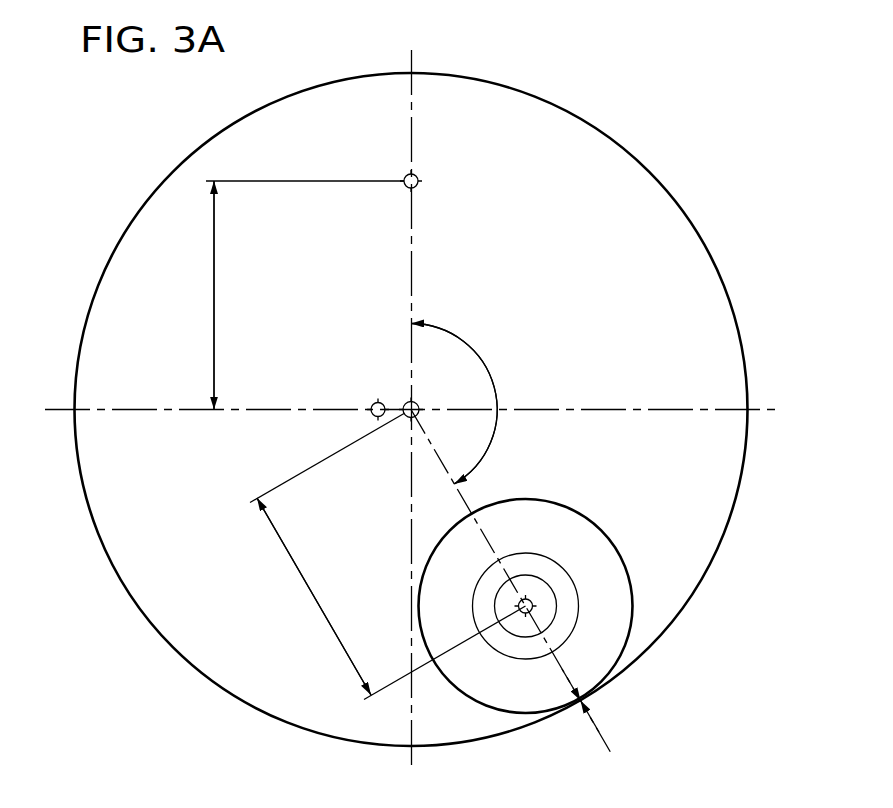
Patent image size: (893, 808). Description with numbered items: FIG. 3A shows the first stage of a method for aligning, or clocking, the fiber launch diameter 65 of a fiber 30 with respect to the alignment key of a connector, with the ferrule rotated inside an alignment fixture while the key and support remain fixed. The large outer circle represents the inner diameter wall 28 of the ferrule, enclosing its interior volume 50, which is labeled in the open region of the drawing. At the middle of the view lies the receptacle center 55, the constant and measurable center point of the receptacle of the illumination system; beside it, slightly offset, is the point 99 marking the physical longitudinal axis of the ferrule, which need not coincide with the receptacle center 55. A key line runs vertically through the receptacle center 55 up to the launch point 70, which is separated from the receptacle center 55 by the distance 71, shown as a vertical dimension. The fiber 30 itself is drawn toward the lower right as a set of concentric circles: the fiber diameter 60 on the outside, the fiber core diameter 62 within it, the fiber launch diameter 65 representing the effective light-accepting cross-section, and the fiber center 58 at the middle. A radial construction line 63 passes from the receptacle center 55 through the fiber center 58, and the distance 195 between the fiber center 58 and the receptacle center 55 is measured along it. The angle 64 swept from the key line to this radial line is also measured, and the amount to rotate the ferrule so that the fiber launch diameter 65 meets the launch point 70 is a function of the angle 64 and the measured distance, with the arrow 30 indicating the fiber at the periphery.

The inner diameter wall 28 is at (569, 106).
The interior volume 50 is at (606, 298).
The receptacle center 55 is at (417, 404).
The physical longitudinal axis point 99 is at (372, 403).
The launch point 70 is at (416, 176).
The distance 71 is at (214, 242).
The angle 64 is at (497, 388).
The radial axis line 63 is at (590, 723).
The fiber diameter 60 is at (526, 499).
The fiber core diameter 62 is at (533, 552).
The fiber launch diameter 65 is at (523, 639).
The fiber center 58 is at (531, 600).
The radial distance dimension 195 is at (317, 596).
The fiber 30 is at (637, 607).